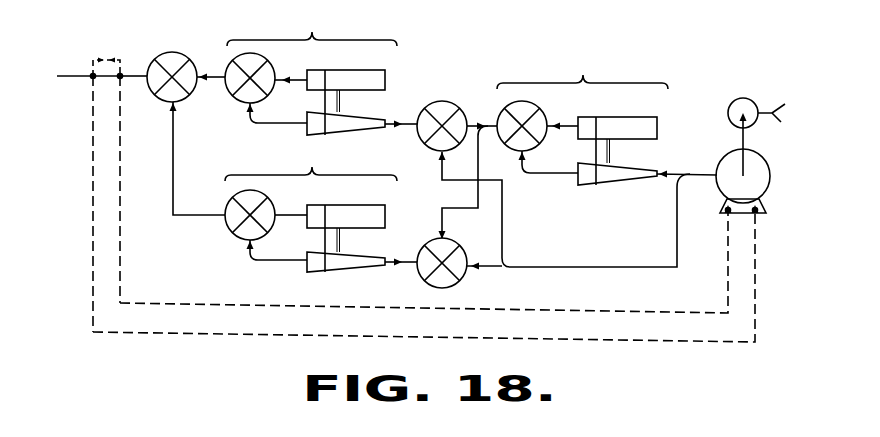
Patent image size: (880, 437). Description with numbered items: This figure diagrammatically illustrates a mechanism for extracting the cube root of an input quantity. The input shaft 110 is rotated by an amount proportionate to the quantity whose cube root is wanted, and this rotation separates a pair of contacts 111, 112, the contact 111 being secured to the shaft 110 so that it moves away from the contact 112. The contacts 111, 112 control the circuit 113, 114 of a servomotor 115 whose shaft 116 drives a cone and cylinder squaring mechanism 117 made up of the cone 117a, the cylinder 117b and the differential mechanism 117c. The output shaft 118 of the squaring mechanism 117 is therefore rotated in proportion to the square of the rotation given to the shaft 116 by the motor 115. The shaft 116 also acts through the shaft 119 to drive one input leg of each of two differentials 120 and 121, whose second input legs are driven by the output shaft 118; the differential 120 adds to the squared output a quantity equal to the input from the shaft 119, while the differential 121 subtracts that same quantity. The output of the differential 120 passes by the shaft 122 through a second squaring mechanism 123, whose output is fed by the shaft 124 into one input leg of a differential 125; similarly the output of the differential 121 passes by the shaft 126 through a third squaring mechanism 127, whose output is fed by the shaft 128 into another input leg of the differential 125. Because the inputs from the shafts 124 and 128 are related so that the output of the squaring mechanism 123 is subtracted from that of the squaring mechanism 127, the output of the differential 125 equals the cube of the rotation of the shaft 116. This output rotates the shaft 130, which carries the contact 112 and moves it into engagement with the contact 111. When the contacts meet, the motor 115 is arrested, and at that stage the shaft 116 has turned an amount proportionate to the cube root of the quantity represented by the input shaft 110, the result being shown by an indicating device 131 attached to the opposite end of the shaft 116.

The input shaft 110 is at (72, 77).
The contact 111 is at (93, 58).
The contact 112 is at (120, 58).
The circuit 113 is at (252, 337).
The circuit 114 is at (226, 303).
The servomotor 115 is at (764, 165).
The shaft 116 is at (680, 176).
The cone and cylinder squaring mechanism 117 is at (582, 133).
The cone 117a is at (622, 178).
The cylinder 117b is at (630, 122).
The differential mechanism 117c is at (532, 113).
The output shaft 118 is at (487, 124).
The shaft 119 is at (571, 266).
The differential 120 is at (463, 276).
The differential 121 is at (448, 107).
The shaft 122 is at (412, 261).
The second squaring mechanism 123 is at (311, 210).
The shaft 124 is at (175, 157).
The differential 125 is at (181, 63).
The shaft 126 is at (412, 122).
The third squaring mechanism 127 is at (311, 71).
The shaft 128 is at (210, 80).
The shaft 130 is at (140, 74).
The indicating device 131 is at (758, 105).